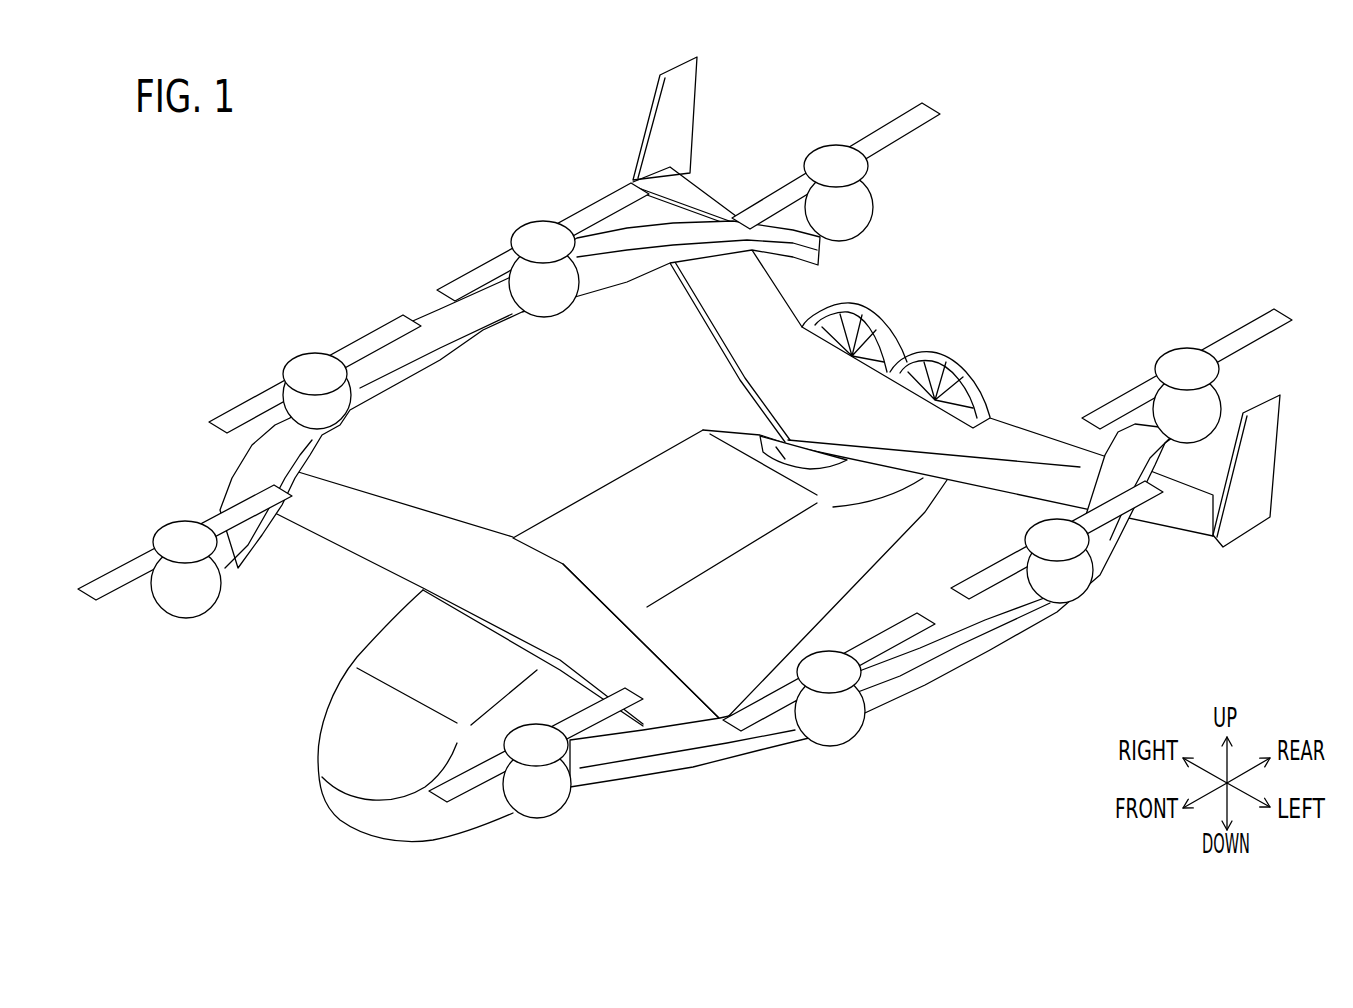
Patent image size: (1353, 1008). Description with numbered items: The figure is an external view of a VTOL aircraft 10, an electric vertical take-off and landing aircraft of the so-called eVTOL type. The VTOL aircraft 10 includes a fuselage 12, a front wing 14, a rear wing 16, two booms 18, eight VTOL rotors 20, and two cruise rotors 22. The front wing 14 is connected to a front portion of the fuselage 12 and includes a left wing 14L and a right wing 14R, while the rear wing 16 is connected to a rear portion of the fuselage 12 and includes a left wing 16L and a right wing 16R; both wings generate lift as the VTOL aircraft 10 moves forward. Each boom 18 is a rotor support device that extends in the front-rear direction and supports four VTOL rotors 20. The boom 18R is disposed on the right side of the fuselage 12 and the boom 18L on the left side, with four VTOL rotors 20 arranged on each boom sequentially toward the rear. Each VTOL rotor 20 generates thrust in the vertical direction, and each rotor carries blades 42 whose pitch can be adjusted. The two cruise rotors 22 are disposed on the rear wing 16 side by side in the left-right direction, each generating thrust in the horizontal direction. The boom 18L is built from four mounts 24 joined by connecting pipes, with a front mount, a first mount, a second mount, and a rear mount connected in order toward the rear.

The VTOL aircraft 10 is at (488, 116).
The fuselage 12 is at (630, 505).
The front wing 14 is at (501, 599).
The right wing 14R is at (368, 507).
The left wing 14L is at (633, 653).
The rear wing 16 is at (923, 351).
The right wing 16R is at (765, 287).
The left wing 16L is at (1007, 450).
The boom 18 is at (701, 522).
The boom 18R is at (413, 358).
The boom 18L is at (630, 767).
The VTOL rotor 20 is at (289, 352).
The cruise rotor 22 is at (873, 307).
The mount 24 is at (797, 463).
The blade 42 is at (468, 290).